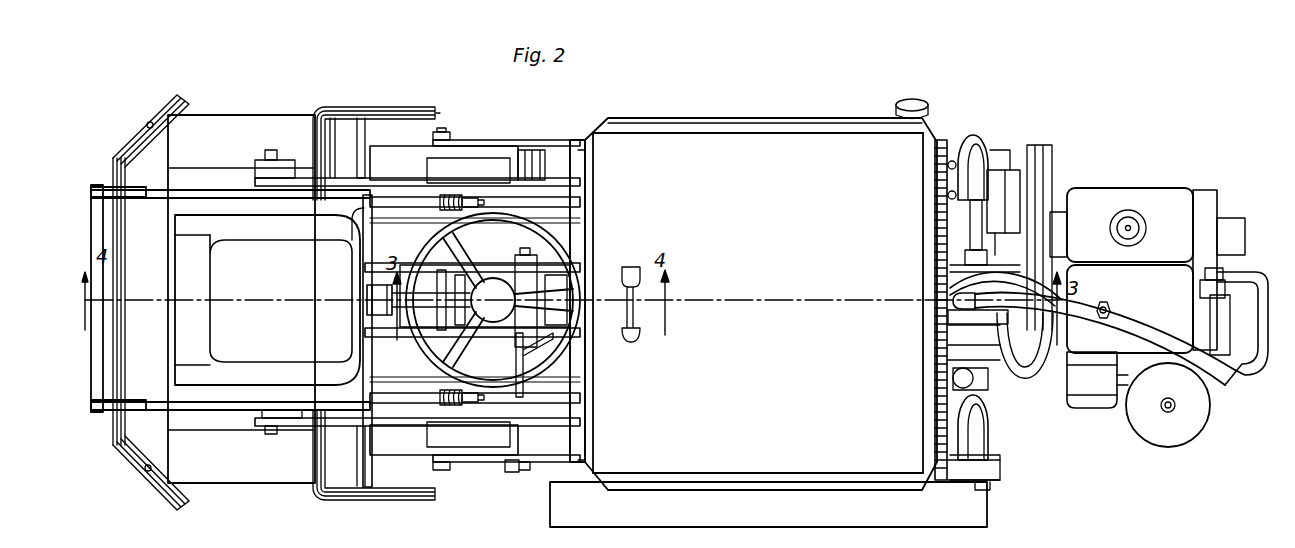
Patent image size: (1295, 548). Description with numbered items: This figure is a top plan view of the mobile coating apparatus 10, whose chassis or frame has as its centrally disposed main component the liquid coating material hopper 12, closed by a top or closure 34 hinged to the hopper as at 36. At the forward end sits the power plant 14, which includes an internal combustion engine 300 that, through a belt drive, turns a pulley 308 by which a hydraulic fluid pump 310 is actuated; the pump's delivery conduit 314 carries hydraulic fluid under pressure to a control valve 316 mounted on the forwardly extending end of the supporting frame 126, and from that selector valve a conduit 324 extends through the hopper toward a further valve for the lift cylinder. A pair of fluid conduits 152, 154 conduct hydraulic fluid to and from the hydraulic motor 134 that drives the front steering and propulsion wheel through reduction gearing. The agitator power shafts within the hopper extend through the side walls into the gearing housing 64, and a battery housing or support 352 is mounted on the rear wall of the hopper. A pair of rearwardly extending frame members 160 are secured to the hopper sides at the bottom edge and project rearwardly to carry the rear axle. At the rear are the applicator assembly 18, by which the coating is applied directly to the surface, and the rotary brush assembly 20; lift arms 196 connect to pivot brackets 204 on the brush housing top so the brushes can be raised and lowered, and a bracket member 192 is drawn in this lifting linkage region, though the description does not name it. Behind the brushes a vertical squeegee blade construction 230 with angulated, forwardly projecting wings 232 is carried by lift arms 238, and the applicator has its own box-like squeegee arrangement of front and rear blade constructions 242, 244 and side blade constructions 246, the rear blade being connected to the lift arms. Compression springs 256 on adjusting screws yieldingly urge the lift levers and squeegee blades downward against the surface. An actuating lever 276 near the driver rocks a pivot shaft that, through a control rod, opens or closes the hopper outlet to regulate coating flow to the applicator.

The apparatus 10 is at (625, 108).
The liquid coating material hopper 12 is at (787, 148).
The power plant 14 is at (1120, 408).
The applicator assembly 18 is at (388, 100).
The rotary brush assembly 20 is at (229, 109).
The top or closure 34 is at (712, 150).
The hinge 36 is at (944, 199).
The gearing housing 64 is at (746, 497).
The supporting frame 126 is at (385, 336).
The hydraulic motor 134 is at (1228, 290).
The fluid conduit 152 is at (1113, 306).
The fluid conduit 154 is at (1208, 370).
The rearwardly extending frame members 160 is at (512, 470).
The bracket plate 192 is at (368, 212).
The lift arms 196 is at (337, 180).
The pivot brackets 204 is at (262, 426).
The vertical squeegee blade construction 230 is at (112, 160).
The wings or ends 232 is at (150, 472).
The lift arms 238 is at (193, 192).
The front squeegee blade construction 242 is at (367, 143).
The rear squeegee blade construction 244 is at (313, 143).
The side blade constructions 246 is at (339, 106).
The compression springs 256 is at (452, 196).
The actuating lever 276 is at (520, 388).
The internal combustion engine 300 is at (1103, 332).
The pulley 308 is at (1050, 178).
The hydraulic fluid pump 310 is at (997, 168).
The delivery conduit 314 is at (960, 155).
The control valve 316 is at (963, 326).
The conduit 324 is at (963, 285).
The battery housing or support 352 is at (565, 432).